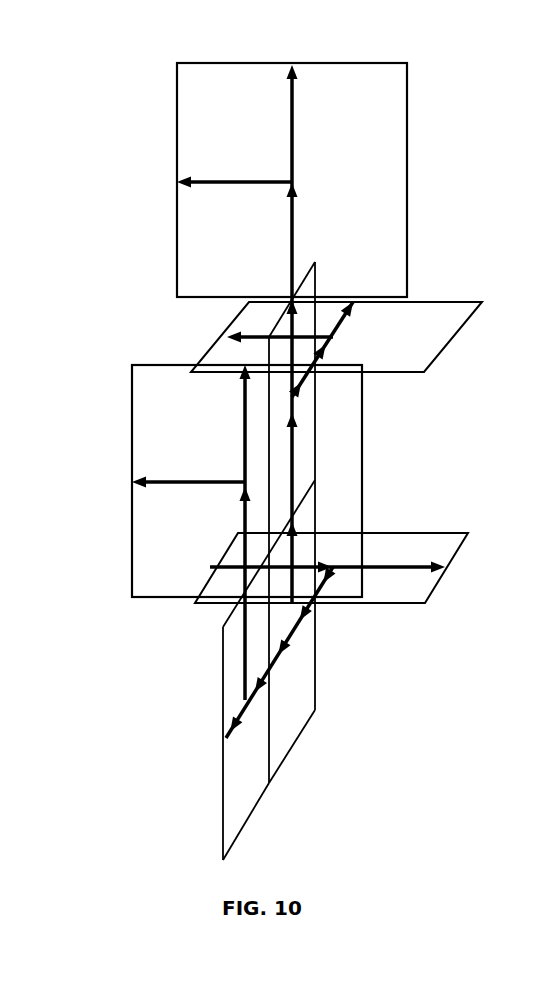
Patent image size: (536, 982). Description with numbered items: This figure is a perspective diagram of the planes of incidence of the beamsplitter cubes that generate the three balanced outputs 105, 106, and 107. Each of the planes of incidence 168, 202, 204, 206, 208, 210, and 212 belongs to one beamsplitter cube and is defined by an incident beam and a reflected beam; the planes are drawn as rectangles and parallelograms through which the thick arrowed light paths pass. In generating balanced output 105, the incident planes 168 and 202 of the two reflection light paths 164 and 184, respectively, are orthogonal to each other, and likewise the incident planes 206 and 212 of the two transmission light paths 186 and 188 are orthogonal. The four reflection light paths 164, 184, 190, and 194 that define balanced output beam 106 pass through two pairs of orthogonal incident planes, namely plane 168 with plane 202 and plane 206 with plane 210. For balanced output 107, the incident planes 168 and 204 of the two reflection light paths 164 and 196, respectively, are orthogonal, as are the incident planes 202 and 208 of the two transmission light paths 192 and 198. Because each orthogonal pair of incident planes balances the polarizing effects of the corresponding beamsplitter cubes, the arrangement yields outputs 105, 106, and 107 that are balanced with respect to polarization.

The balanced output 105 is at (290, 63).
The transmission light path 188 is at (293, 110).
The plane of incidence 212 is at (407, 222).
The transmission light path 186 is at (290, 312).
The balanced output beam 106 is at (244, 341).
The reflection light path 194 is at (247, 337).
The balanced output 107 is at (245, 365).
The transmission light path 198 is at (243, 422).
The plane of incidence 208 is at (132, 514).
The plane of incidence 210 is at (456, 333).
The reflection light path 190 is at (295, 392).
The plane of incidence 206 is at (317, 445).
The reflection light path 184 is at (293, 557).
The plane of incidence 168 is at (390, 533).
The reflection light path 164 is at (333, 578).
The reflection light path 196 is at (243, 642).
The transmission light path 192 is at (288, 648).
The plane of incidence 202 is at (292, 750).
The plane of incidence 204 is at (250, 817).